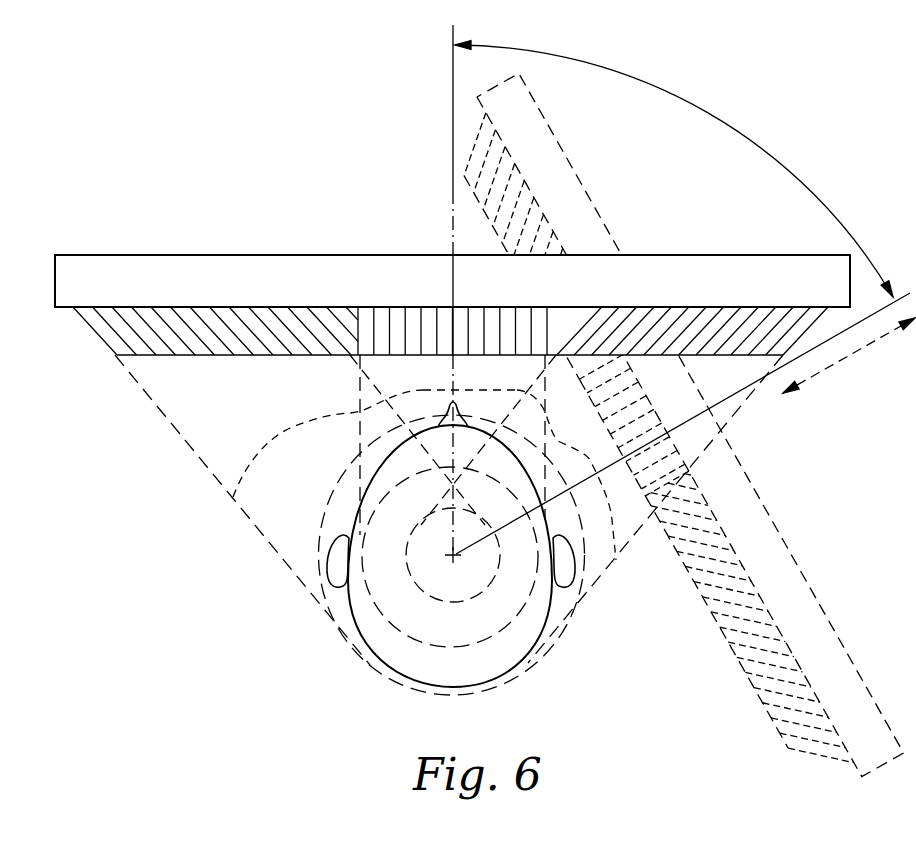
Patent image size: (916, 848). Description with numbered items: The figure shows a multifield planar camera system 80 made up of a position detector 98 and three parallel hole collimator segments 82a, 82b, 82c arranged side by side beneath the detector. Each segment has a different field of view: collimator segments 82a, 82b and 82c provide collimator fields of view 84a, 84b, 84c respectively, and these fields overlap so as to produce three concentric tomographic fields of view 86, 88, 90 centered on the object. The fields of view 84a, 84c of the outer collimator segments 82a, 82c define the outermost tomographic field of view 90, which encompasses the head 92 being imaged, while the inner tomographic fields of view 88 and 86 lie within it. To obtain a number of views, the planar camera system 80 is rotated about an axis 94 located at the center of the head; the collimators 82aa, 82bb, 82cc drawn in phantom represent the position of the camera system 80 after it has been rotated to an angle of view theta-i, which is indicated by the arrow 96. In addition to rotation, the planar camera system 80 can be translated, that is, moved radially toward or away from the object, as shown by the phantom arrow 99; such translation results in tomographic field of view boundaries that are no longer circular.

The multifield planar camera system 80 is at (292, 131).
The position detector 98 is at (205, 291).
The collimator segment 82a is at (258, 356).
The collimator segment 82b is at (468, 307).
The collimator segment 82c is at (712, 307).
The collimator (phantom position) 82aa is at (503, 235).
The collimator (phantom position) 82bb is at (693, 459).
The collimator (phantom position) 82cc is at (725, 637).
The collimator field of view 84a is at (300, 510).
The collimator field of view 84b is at (452, 445).
The collimator field of view 84c is at (548, 432).
The tomographic field of view 86 is at (446, 548).
The tomographic field of view 88 is at (455, 631).
The tomographic field of view 90 is at (399, 658).
The head 92 is at (541, 637).
The axis 94 is at (458, 556).
The arrow 96 is at (752, 134).
The phantom arrow 99 is at (853, 355).